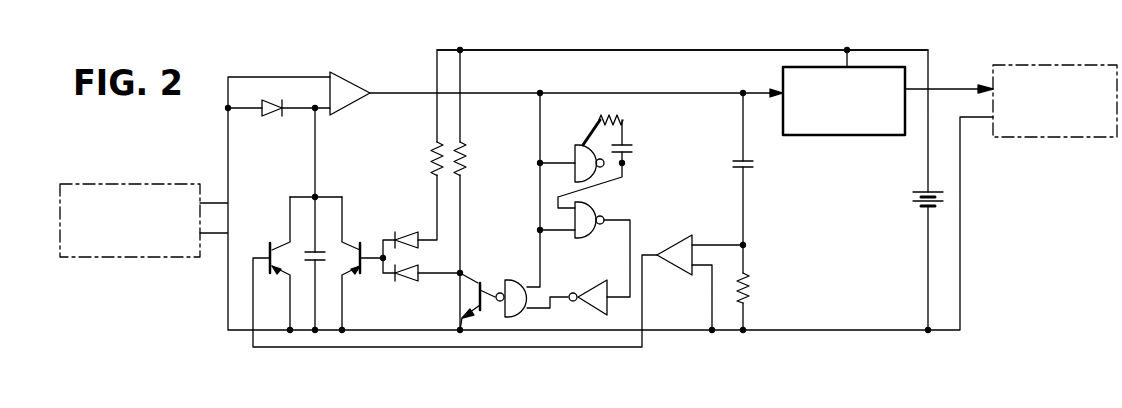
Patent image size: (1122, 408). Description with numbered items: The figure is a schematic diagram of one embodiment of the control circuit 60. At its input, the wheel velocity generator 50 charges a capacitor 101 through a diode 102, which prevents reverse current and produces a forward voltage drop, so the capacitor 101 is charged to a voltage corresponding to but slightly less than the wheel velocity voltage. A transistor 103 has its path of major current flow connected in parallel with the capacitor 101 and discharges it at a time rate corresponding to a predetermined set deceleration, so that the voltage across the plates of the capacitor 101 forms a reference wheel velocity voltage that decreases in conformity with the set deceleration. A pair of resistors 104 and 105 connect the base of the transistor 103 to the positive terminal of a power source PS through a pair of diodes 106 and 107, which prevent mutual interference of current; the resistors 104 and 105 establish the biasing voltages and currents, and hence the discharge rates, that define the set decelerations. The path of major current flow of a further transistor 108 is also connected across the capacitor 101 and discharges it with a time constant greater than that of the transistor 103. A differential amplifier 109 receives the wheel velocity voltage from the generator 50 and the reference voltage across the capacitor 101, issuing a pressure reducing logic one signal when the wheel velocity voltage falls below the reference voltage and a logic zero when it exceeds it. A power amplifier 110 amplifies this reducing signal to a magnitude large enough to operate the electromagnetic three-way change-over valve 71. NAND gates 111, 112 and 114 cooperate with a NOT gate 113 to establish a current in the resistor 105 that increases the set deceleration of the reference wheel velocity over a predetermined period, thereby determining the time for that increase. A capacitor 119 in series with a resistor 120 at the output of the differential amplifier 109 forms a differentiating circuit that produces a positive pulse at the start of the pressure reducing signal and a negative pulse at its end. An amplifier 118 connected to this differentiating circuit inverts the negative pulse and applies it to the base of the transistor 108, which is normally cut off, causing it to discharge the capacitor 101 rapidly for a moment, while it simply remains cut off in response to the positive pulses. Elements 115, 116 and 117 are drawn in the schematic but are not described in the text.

The wheel velocity generator 50 is at (128, 183).
The control circuit 60 is at (656, 44).
The electromagnetic three-way change-over valve 71 is at (1043, 63).
The capacitor 101 is at (318, 262).
The diode 102 is at (270, 117).
The transistor 103 is at (348, 240).
The resistor 104 is at (433, 171).
The resistor 105 is at (462, 142).
The diode 106 is at (413, 233).
The diode 107 is at (403, 285).
The transistor 108 is at (282, 242).
The differential amplifier 109 is at (356, 82).
The power amplifier 110 is at (810, 137).
The NAND gate 111 is at (582, 143).
The NAND gate 112 is at (597, 200).
The NOT gate 113 is at (591, 258).
The NAND gate 114 is at (513, 318).
The transistor 115 is at (472, 282).
The capacitor 116 is at (634, 148).
The resistor 117 is at (622, 112).
The amplifier 118 is at (660, 240).
The capacitor 119 is at (750, 163).
The resistor 120 is at (752, 302).
The power source PS is at (925, 203).